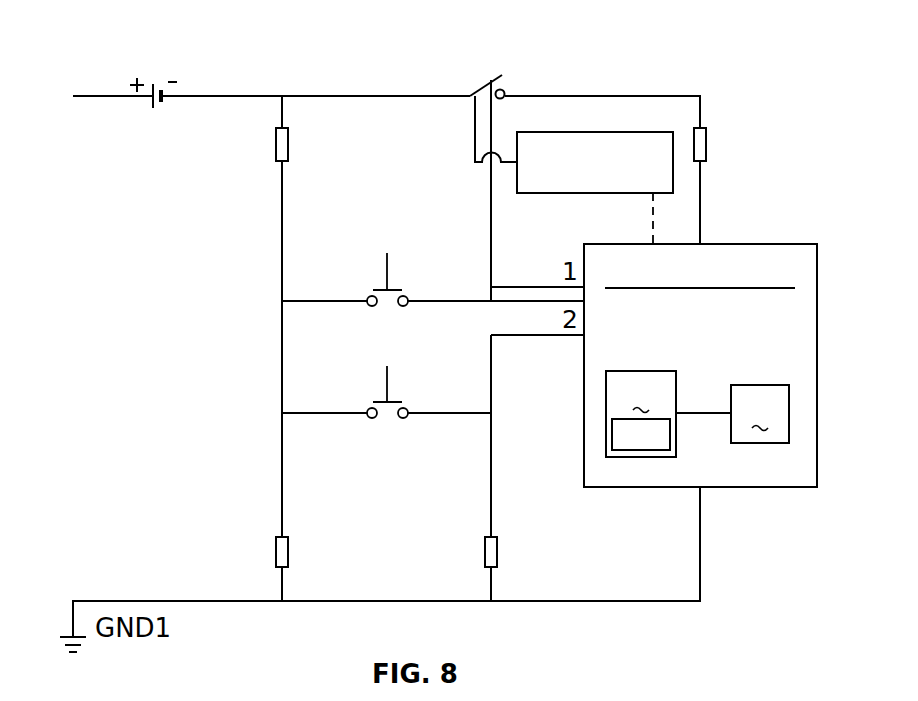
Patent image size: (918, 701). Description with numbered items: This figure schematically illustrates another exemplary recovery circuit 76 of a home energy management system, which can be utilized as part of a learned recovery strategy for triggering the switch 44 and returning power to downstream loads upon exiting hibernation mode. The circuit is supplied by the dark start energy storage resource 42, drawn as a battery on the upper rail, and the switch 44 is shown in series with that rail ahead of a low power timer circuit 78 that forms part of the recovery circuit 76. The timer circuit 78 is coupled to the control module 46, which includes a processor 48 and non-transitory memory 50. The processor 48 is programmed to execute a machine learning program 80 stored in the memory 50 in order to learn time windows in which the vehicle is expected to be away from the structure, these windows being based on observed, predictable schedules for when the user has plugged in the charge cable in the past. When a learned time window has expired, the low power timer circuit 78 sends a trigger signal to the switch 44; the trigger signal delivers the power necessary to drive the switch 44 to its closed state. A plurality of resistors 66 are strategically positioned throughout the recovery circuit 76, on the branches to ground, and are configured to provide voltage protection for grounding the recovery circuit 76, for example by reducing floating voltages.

The dark start energy storage resource 42 is at (158, 70).
The switch 44 is at (493, 71).
The control module 46 is at (636, 244).
The processor 48 is at (760, 385).
The memory 50 is at (641, 371).
The resistors 66 is at (289, 144).
The recovery circuit 76 is at (713, 44).
The low power timer circuit 78 is at (570, 132).
The machine learning program 80 is at (642, 450).